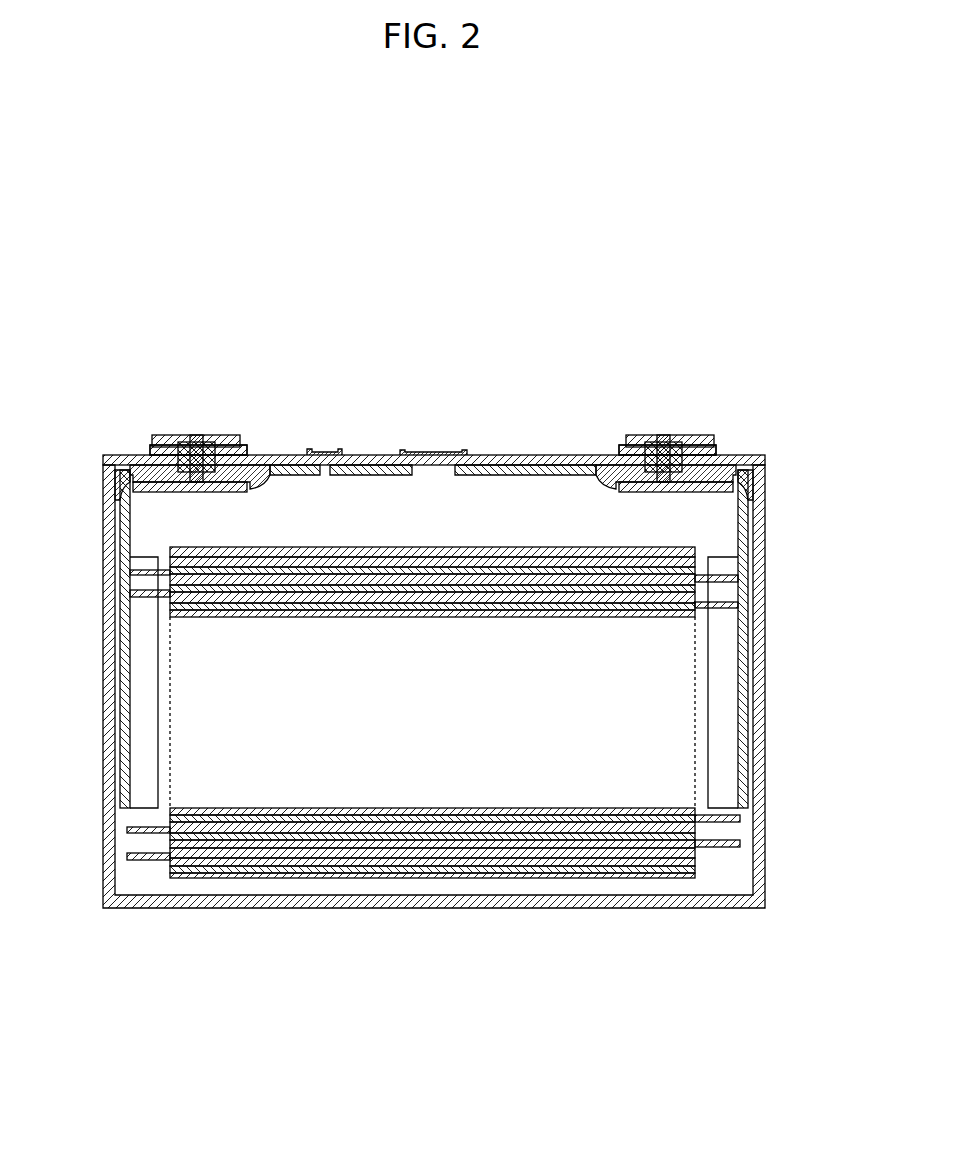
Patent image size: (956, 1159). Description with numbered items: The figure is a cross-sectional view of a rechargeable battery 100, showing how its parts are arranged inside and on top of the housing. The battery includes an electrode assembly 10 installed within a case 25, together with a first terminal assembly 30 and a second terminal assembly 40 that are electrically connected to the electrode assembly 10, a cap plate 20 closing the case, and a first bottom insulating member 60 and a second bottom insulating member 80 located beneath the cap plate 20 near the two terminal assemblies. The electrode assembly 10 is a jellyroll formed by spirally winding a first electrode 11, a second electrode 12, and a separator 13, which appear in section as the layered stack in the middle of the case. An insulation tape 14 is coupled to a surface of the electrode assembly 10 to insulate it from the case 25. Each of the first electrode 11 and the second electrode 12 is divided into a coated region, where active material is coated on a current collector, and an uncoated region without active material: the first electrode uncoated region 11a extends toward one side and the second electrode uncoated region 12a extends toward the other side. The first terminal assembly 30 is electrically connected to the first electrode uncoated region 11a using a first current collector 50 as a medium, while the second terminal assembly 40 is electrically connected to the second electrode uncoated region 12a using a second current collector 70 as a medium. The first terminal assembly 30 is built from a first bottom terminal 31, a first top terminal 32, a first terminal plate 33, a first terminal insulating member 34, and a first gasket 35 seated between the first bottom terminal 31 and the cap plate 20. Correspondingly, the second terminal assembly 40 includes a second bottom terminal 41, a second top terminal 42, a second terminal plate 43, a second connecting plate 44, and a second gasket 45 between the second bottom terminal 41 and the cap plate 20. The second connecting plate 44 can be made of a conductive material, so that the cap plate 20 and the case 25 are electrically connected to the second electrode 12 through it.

The rechargeable battery 100 is at (462, 290).
The electrode assembly 10 is at (505, 768).
The first electrode 11 is at (228, 858).
The first electrode uncoated region 11a is at (143, 860).
The second electrode 12 is at (300, 858).
The second electrode uncoated region 12a is at (712, 848).
The separator 13 is at (438, 835).
The insulation tape 14 is at (585, 547).
The cap plate 20 is at (494, 455).
The case 25 is at (760, 752).
The first terminal assembly 30 is at (82, 218).
The first bottom terminal 31 is at (204, 494).
The first top terminal 32 is at (192, 436).
The first terminal plate 33 is at (222, 440).
The first terminal insulating member 34 is at (247, 450).
The first gasket 35 is at (160, 436).
The second terminal assembly 40 is at (775, 230).
The second bottom terminal 41 is at (667, 494).
The second top terminal 42 is at (670, 436).
The second terminal plate 43 is at (642, 438).
The second connecting plate 44 is at (620, 450).
The second gasket 45 is at (700, 448).
The first current collector 50 is at (126, 578).
The first bottom insulating member 60 is at (116, 484).
The second current collector 70 is at (746, 611).
The second bottom insulating member 80 is at (750, 483).